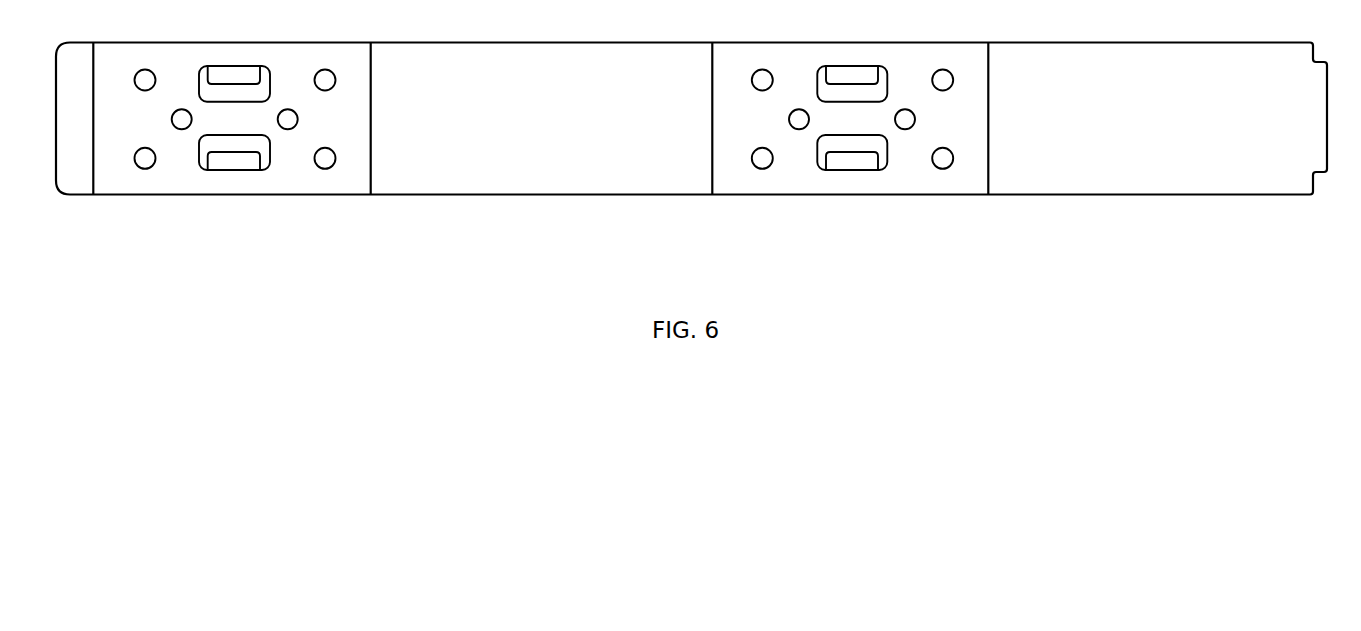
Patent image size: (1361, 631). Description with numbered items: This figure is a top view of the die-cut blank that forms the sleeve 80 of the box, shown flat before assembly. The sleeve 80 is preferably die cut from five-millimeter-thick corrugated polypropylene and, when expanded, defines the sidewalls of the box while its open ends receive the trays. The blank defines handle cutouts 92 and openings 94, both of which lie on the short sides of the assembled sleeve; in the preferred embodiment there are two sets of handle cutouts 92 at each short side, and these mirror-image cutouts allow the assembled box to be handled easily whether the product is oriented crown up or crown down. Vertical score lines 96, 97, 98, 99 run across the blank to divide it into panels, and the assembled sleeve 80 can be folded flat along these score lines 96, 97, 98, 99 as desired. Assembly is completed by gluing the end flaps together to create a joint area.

The sleeve 80 is at (460, 237).
The handle cutouts 92 is at (205, 166).
The openings 94 is at (953, 160).
The score line 96 is at (93, 183).
The score line 97 is at (369, 183).
The score line 98 is at (712, 92).
The score line 99 is at (988, 70).